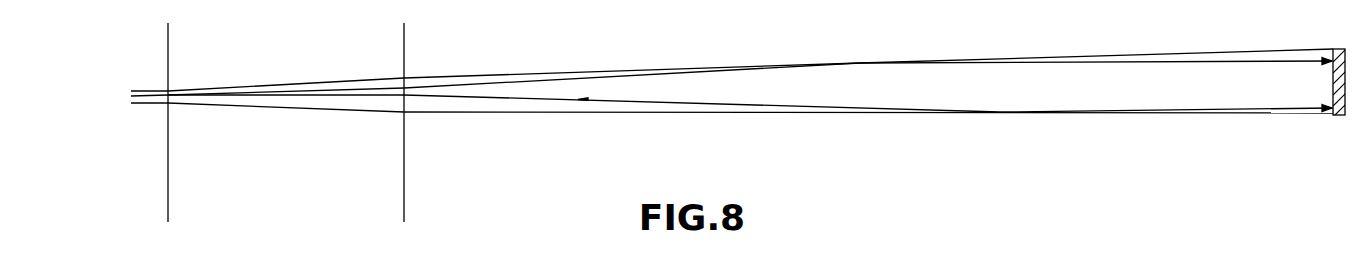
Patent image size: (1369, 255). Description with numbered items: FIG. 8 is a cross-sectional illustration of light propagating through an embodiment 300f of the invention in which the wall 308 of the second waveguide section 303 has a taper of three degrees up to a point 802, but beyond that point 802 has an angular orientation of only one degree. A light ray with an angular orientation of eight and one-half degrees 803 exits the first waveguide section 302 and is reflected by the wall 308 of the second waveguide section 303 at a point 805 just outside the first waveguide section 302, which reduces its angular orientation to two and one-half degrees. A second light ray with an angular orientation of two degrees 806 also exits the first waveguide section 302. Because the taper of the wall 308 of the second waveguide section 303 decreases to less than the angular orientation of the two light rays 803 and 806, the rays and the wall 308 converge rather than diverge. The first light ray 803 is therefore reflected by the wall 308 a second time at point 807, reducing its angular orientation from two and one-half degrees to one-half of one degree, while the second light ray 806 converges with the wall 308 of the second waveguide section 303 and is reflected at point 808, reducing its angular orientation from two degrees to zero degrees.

The point 802 is at (404, 78).
The light ray with an angular orientation of 8.5 degrees 803 is at (148, 91).
The first waveguide section 302 is at (148, 104).
The point 805 is at (180, 90).
The second waveguide section 303 is at (312, 85).
The light ray with an angular orientation of two degrees 806 is at (246, 105).
The wall 308 is at (497, 74).
The point 808 is at (852, 63).
The embodiment 300f is at (736, 115).
The point 807 is at (1001, 113).